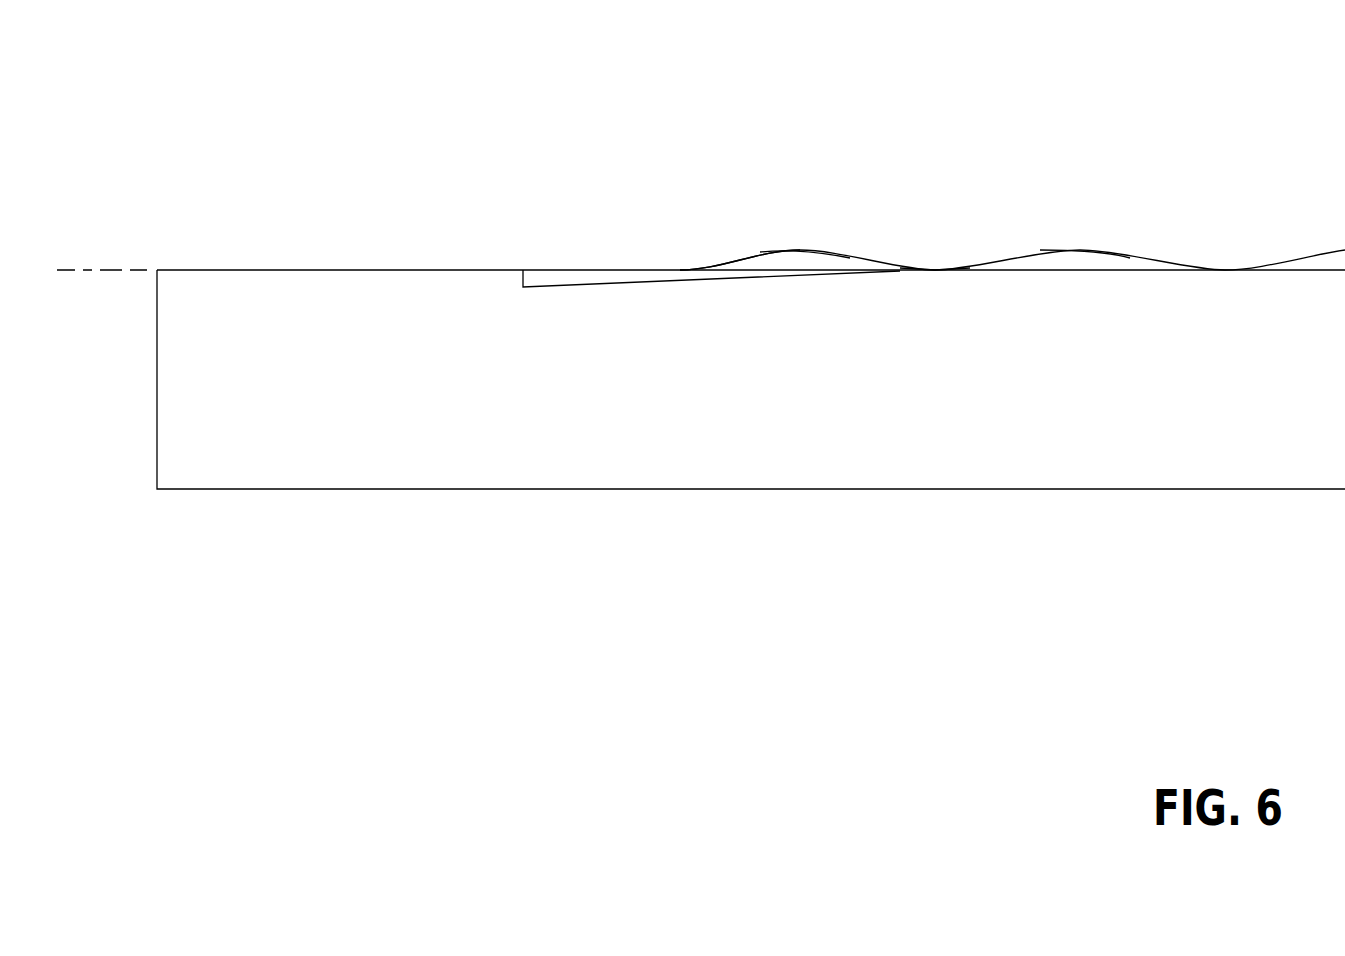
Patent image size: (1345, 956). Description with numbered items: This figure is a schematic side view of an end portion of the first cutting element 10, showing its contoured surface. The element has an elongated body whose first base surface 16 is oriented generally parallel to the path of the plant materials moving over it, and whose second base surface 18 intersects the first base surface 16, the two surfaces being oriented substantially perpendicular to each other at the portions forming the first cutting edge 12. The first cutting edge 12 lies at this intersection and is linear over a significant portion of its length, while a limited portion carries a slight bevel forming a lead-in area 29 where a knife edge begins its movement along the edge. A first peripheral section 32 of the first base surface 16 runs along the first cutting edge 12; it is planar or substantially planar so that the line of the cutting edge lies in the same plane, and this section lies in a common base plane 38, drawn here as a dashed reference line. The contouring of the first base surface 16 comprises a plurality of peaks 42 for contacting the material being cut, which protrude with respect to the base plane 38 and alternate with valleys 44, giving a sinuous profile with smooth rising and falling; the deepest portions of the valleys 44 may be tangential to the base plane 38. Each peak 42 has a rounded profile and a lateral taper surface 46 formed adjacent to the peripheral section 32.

The first cutting element 10 is at (1230, 133).
The first cutting edge 12 is at (1160, 270).
The first base surface 16 is at (265, 270).
The second base surface 18 is at (301, 420).
The lead-in area 29 is at (562, 285).
The first peripheral section 32 is at (1115, 270).
The base plane 38 is at (105, 270).
The peaks 42 is at (758, 252).
The valleys 44 is at (943, 270).
The lateral taper surface 46 is at (820, 262).